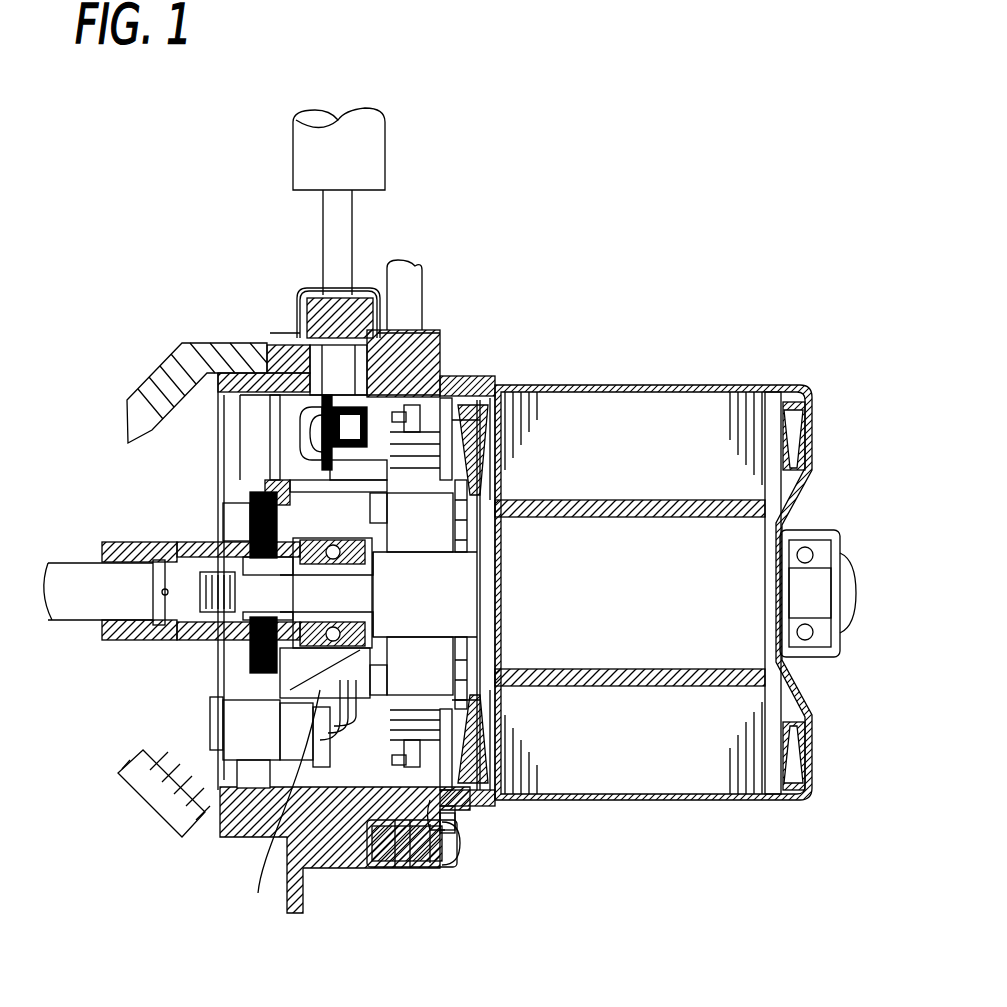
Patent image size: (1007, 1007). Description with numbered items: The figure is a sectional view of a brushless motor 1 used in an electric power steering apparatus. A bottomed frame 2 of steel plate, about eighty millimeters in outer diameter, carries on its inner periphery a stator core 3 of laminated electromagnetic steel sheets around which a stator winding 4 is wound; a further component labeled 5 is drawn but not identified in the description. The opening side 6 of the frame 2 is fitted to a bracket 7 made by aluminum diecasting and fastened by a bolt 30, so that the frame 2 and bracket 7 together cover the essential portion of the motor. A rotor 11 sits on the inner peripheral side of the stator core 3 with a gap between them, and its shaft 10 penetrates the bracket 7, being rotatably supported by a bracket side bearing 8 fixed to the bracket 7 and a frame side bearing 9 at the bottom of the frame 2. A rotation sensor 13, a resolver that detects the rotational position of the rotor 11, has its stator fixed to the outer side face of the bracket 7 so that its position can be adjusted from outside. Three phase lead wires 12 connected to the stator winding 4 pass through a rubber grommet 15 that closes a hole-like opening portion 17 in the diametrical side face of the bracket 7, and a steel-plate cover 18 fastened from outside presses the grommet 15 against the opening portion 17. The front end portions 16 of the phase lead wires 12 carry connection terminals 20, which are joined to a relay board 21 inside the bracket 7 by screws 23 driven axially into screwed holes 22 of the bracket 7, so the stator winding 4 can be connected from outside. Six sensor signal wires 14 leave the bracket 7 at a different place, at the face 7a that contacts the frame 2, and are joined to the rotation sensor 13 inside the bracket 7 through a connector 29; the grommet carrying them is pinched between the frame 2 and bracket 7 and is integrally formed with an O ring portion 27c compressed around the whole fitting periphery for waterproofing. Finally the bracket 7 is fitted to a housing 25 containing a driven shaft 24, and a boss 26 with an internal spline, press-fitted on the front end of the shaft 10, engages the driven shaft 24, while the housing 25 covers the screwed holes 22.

The brushless motor 1 is at (805, 330).
The bottomed frame 2 is at (635, 385).
The stator core 3 is at (690, 407).
The stator winding 4 is at (798, 432).
The permanent magnet 5 is at (728, 383).
The opening side 6 is at (457, 382).
The bracket 7 is at (350, 860).
The face 7a is at (440, 873).
The bracket side bearing 8 is at (283, 700).
The frame side bearing 9 is at (820, 530).
The shaft 10 is at (457, 597).
The rotor 11 is at (665, 630).
The respective phase lead wires 12 is at (338, 223).
The rotation sensor 13 is at (238, 652).
The sensor signal wires 14 is at (407, 302).
The grommet 15 is at (298, 305).
The front end portions 16 is at (330, 378).
The hole-like opening portion 17 is at (358, 297).
The cover 18 is at (322, 293).
The connection terminals 20 is at (263, 402).
The relay board 21 is at (282, 465).
The screwed holes 22 is at (275, 445).
The screws 23 is at (427, 330).
The driven shaft 24 is at (82, 608).
The housing 25 is at (152, 385).
The boss 26 is at (118, 632).
The O ring portion 27c is at (450, 803).
The connector 29 is at (282, 806).
The bolt 30 is at (455, 845).